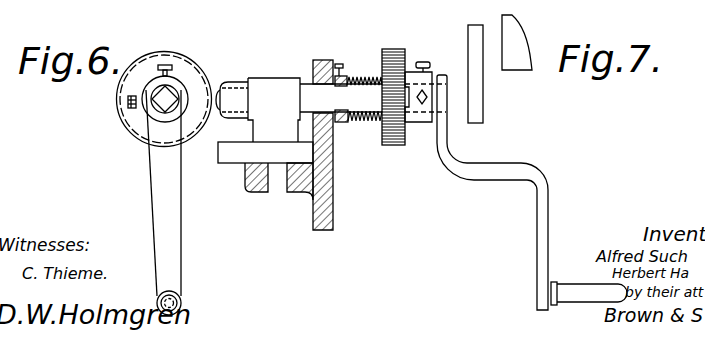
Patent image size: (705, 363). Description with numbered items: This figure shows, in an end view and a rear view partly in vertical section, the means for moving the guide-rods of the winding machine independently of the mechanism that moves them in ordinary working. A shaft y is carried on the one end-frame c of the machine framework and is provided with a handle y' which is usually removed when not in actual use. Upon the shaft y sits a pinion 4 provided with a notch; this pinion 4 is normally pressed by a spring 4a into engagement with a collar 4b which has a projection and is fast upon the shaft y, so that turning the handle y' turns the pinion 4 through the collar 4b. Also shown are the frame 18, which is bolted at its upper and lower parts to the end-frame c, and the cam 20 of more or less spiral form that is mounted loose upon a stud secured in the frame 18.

In FIG. 6, the shaft y is at (152, 99).
In FIG. 7, the shaft y is at (373, 97).
In FIG. 6, the handle y' is at (151, 202).
In FIG. 7, the handle y' is at (532, 192).
In FIG. 7, the end-frame c is at (323, 158).
In FIG. 7, the pinion 4 is at (393, 107).
In FIG. 7, the spring 4a is at (355, 124).
In FIG. 7, the collar 4b is at (420, 125).
In FIG. 7, the frame 18 is at (523, 41).
In FIG. 7, the cam 20 is at (489, 74).